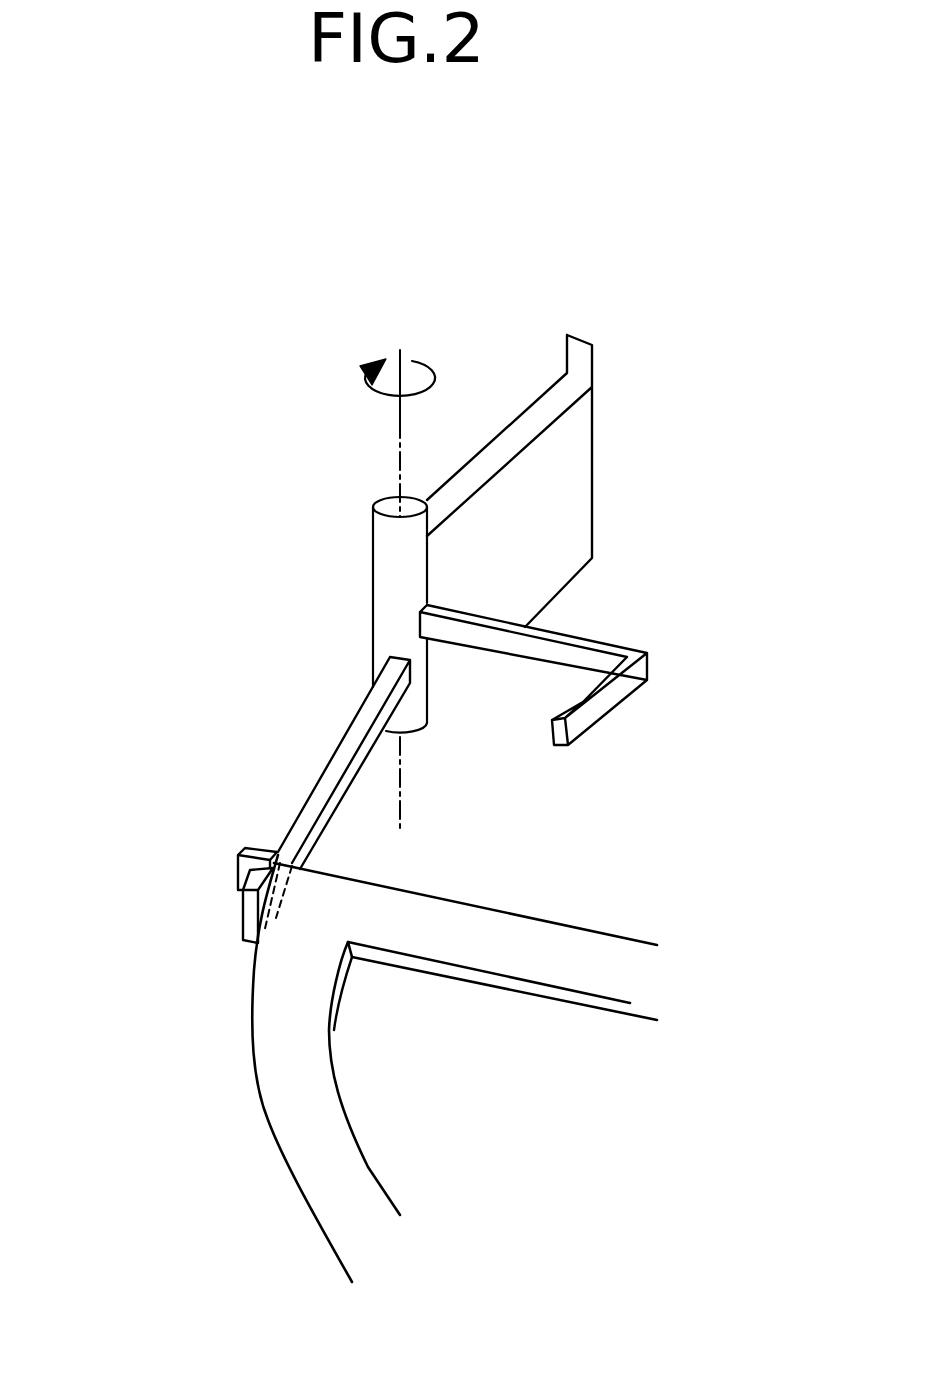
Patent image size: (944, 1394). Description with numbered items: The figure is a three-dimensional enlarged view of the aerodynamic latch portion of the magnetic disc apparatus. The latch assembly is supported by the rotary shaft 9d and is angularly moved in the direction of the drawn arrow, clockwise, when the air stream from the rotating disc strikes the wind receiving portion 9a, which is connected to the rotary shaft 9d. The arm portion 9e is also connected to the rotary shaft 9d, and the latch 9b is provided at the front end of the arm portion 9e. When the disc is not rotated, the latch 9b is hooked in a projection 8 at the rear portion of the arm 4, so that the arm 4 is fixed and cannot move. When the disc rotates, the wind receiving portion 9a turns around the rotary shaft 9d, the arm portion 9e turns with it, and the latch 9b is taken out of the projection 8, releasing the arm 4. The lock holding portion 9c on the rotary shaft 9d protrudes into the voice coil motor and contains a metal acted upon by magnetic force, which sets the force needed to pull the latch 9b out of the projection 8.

The arm 4 is at (547, 935).
The projection 8 is at (253, 850).
The wind receiving portion 9a is at (577, 487).
The latch 9b is at (252, 920).
The lock holding portion 9c is at (573, 728).
The rotary shaft 9d is at (383, 497).
The arm portion 9e is at (355, 713).